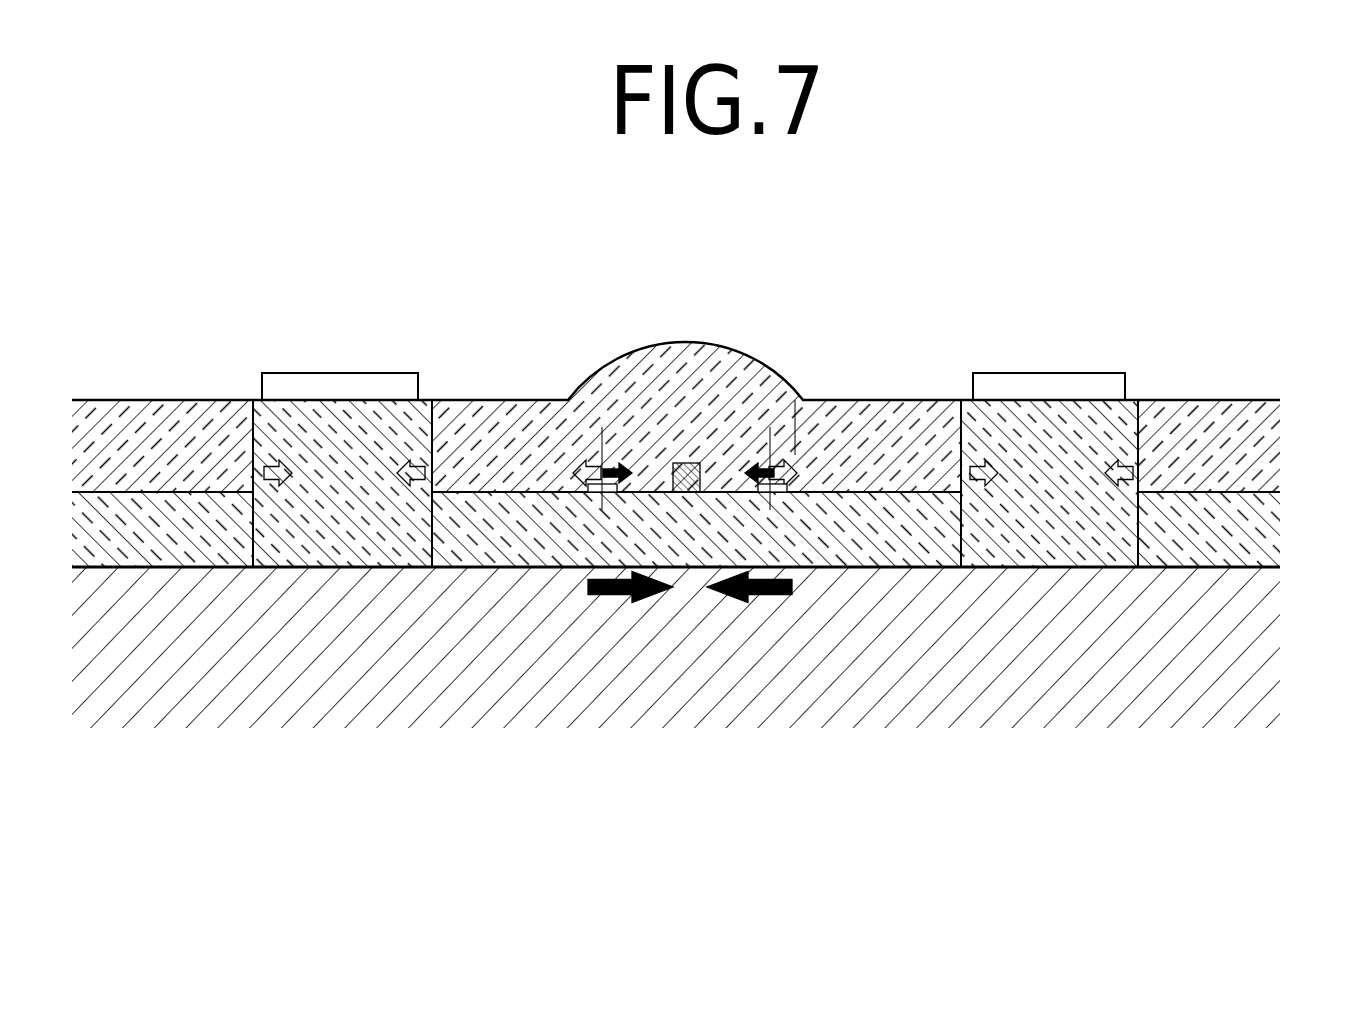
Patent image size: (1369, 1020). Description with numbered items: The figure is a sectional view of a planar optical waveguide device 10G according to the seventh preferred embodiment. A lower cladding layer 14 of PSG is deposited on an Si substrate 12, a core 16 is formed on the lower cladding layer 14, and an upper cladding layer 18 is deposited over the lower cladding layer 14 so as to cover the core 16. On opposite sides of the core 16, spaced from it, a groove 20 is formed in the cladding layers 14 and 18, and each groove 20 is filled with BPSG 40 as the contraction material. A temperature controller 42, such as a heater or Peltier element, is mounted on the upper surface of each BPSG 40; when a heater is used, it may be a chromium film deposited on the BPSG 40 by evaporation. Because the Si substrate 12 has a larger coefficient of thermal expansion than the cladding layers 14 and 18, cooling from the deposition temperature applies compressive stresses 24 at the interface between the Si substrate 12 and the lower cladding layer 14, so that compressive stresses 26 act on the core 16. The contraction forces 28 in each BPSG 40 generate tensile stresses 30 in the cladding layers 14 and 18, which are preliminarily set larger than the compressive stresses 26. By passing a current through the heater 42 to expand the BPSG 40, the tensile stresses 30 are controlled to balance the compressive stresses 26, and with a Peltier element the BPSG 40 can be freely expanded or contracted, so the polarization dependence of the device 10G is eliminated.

The planar optical waveguide device 10G is at (893, 368).
The Si substrate 12 is at (949, 694).
The lower cladding layer 14 is at (1263, 556).
The core 16 is at (688, 460).
The upper cladding layer 18 is at (647, 417).
The groove 20 is at (262, 423).
The compressive stresses 24 is at (616, 597).
The compressive stresses 26 is at (617, 457).
The contraction forces 28 is at (283, 460).
The tensile stresses 30 is at (573, 447).
The BPSG 40 is at (342, 408).
The temperature controller 42 is at (318, 375).